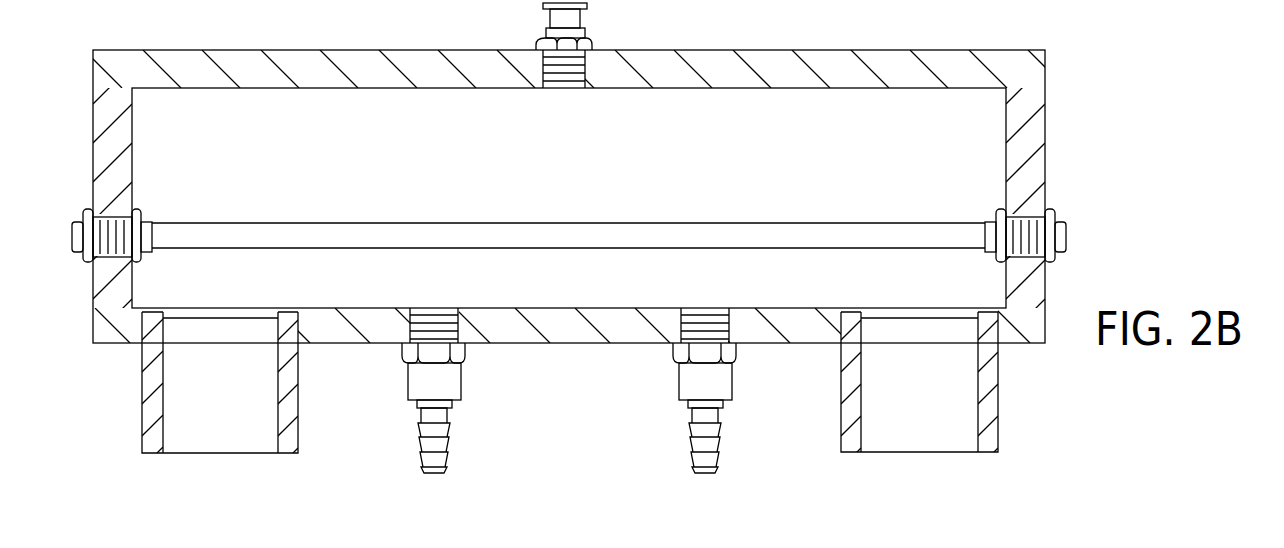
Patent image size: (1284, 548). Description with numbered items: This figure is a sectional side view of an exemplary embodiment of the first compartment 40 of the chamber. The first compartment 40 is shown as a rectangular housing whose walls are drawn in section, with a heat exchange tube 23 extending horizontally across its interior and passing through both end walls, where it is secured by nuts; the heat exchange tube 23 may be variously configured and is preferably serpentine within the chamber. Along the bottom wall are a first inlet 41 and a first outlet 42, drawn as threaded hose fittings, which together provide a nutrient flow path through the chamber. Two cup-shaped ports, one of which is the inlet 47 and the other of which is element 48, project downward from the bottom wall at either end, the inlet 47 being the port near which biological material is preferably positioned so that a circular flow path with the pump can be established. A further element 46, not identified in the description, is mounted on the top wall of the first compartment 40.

The first compartment 40 is at (155, 162).
The heat exchange tube 23 is at (673, 228).
The top fitting 46 is at (593, 44).
The first outlet 42 is at (466, 349).
The first inlet 41 is at (738, 350).
The cup 48 is at (235, 433).
The inlet 47 is at (942, 428).